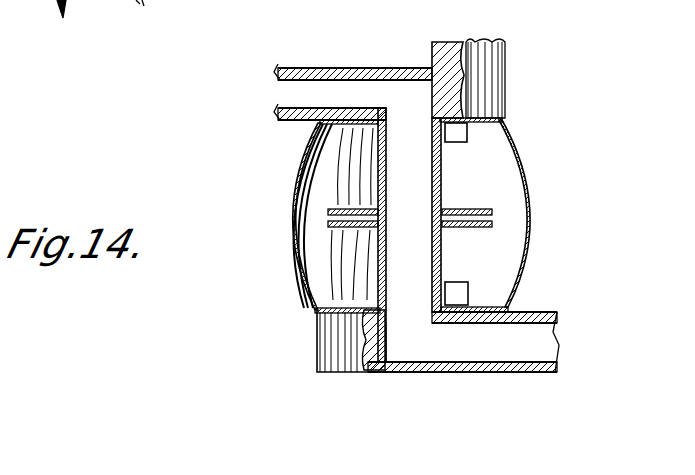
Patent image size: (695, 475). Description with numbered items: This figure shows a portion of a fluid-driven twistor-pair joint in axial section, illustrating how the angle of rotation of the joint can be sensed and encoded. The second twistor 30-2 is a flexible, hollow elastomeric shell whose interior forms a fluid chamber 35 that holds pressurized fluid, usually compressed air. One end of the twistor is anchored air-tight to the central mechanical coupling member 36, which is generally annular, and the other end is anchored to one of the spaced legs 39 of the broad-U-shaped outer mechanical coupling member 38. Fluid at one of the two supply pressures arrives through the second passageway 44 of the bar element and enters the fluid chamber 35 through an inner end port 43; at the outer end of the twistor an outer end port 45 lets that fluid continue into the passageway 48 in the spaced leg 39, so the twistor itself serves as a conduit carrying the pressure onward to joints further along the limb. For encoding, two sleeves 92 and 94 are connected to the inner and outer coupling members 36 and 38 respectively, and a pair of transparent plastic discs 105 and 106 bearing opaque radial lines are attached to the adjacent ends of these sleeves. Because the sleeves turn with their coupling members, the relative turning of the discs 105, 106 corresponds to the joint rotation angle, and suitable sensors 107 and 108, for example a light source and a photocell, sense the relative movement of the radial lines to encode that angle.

The second twistor 30-2 is at (294, 162).
The fluid chamber 35 is at (338, 190).
The central mechanical coupling member 36 is at (507, 82).
The outer mechanical coupling member 38 is at (373, 374).
The spaced legs 39 is at (333, 375).
The inner end port 43 is at (408, 110).
The second passageway 44 is at (302, 88).
The outer end port 45 is at (407, 320).
The passageway 48 is at (520, 342).
The sleeve 92 is at (441, 138).
The sleeve 94 is at (377, 265).
The transparent plastic disc 105 is at (480, 210).
The transparent plastic disc 106 is at (480, 227).
The sensor 107 is at (463, 135).
The sensor 108 is at (468, 293).